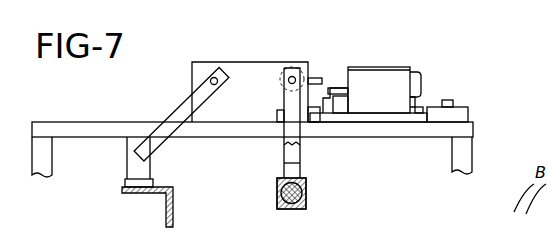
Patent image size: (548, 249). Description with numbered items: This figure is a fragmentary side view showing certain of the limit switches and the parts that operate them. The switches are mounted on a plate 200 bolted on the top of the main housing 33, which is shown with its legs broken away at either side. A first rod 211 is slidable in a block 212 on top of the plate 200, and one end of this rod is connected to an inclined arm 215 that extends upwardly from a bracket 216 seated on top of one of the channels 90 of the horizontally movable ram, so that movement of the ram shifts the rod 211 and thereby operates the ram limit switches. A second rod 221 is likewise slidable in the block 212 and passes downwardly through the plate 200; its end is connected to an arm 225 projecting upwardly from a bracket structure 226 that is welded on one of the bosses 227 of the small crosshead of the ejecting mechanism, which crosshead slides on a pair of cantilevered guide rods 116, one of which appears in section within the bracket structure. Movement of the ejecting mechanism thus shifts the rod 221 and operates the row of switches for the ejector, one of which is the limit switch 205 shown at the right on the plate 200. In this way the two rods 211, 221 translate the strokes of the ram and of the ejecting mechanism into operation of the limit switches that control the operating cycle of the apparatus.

The plate 200 is at (88, 122).
The main housing 33 is at (42, 167).
The block 212 is at (262, 67).
The arm 215 is at (178, 111).
The rod 211 is at (217, 77).
The bracket 216 is at (124, 183).
The channel 90 is at (174, 205).
The rod 221 is at (293, 75).
The arm 225 is at (300, 155).
The bracket structure 226 is at (300, 170).
The boss 227 is at (277, 192).
The guide rod 116 is at (304, 198).
The limit switch 205 is at (384, 73).